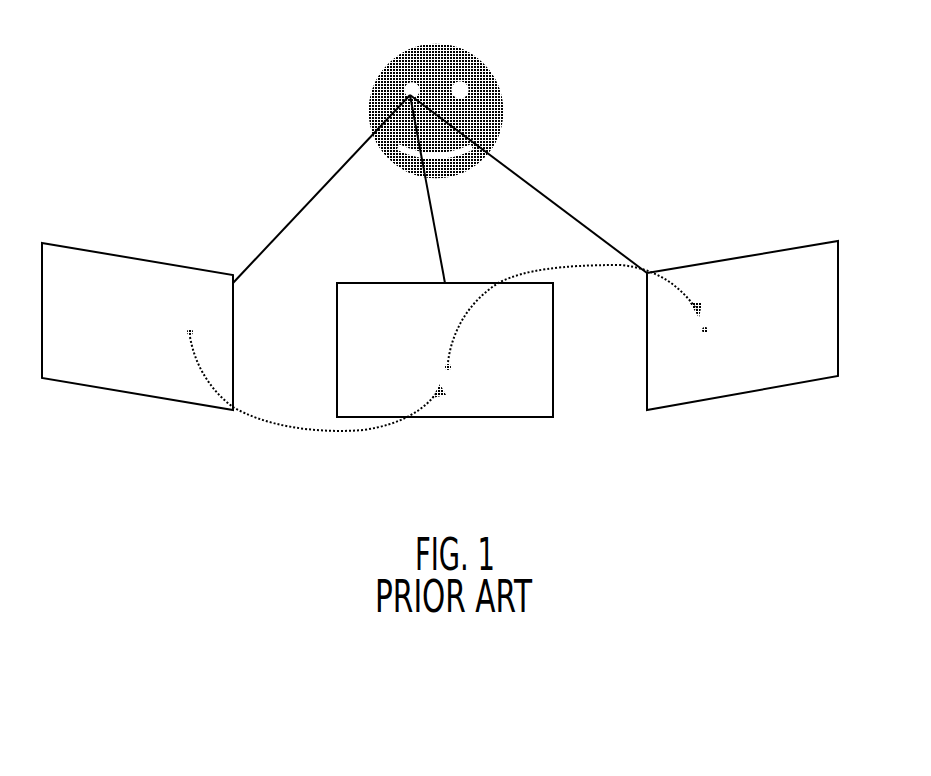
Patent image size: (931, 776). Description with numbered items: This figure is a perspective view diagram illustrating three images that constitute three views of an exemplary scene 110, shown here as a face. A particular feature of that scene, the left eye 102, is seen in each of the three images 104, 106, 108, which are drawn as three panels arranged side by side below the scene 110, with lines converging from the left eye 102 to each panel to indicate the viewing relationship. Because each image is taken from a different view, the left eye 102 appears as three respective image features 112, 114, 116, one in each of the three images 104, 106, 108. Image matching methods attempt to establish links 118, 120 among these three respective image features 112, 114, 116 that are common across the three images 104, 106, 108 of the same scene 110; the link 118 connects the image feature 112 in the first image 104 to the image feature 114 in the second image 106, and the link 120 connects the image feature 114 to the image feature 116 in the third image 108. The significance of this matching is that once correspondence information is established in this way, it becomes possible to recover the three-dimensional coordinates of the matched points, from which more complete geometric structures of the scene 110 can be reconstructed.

The left eye 102 is at (410, 87).
The image 104 is at (143, 398).
The image 106 is at (508, 418).
The image 108 is at (778, 390).
The scene 110 is at (512, 57).
The image feature 112 is at (182, 330).
The image feature 114 is at (443, 367).
The image feature 116 is at (713, 330).
The link 118 is at (280, 427).
The link 120 is at (622, 270).